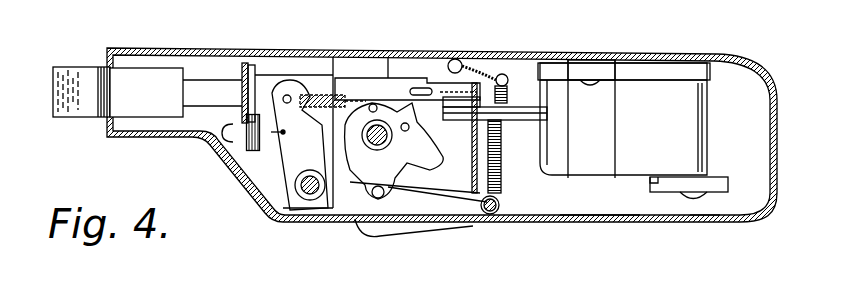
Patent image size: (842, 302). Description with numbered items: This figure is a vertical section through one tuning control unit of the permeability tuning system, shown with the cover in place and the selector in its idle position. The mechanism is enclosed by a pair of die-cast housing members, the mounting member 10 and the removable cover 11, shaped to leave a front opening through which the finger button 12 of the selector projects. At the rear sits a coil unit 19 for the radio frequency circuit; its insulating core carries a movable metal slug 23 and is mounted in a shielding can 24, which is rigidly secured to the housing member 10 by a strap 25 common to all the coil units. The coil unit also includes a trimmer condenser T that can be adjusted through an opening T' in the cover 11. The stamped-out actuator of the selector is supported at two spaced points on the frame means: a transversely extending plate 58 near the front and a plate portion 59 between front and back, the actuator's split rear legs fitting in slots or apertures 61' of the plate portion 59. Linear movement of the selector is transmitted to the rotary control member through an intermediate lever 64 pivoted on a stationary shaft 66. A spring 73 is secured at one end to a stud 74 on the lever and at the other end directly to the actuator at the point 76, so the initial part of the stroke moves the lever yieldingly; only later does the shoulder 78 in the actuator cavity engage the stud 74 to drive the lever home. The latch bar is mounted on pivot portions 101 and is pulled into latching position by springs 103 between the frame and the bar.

The housing member 10 is at (658, 53).
The housing member 11 is at (633, 223).
The finger button 12 is at (90, 112).
The coil unit 19 is at (712, 103).
The metal slug 23 is at (515, 107).
The shielding can 24 is at (641, 177).
The strap 25 is at (617, 123).
The plate 58 is at (242, 68).
The plate portion 59 is at (477, 178).
The slots or apertures 61' is at (460, 118).
The intermediate lever 64 is at (312, 160).
The stationary shaft 66 is at (311, 203).
The spring 73 is at (322, 97).
The stud 74 is at (291, 86).
The spring attachment point 76 is at (373, 94).
The shoulder 78 is at (287, 95).
The pivot portion 101 is at (457, 58).
The spring 103 is at (493, 190).
The trimmer condenser T is at (711, 169).
The opening T' is at (711, 244).